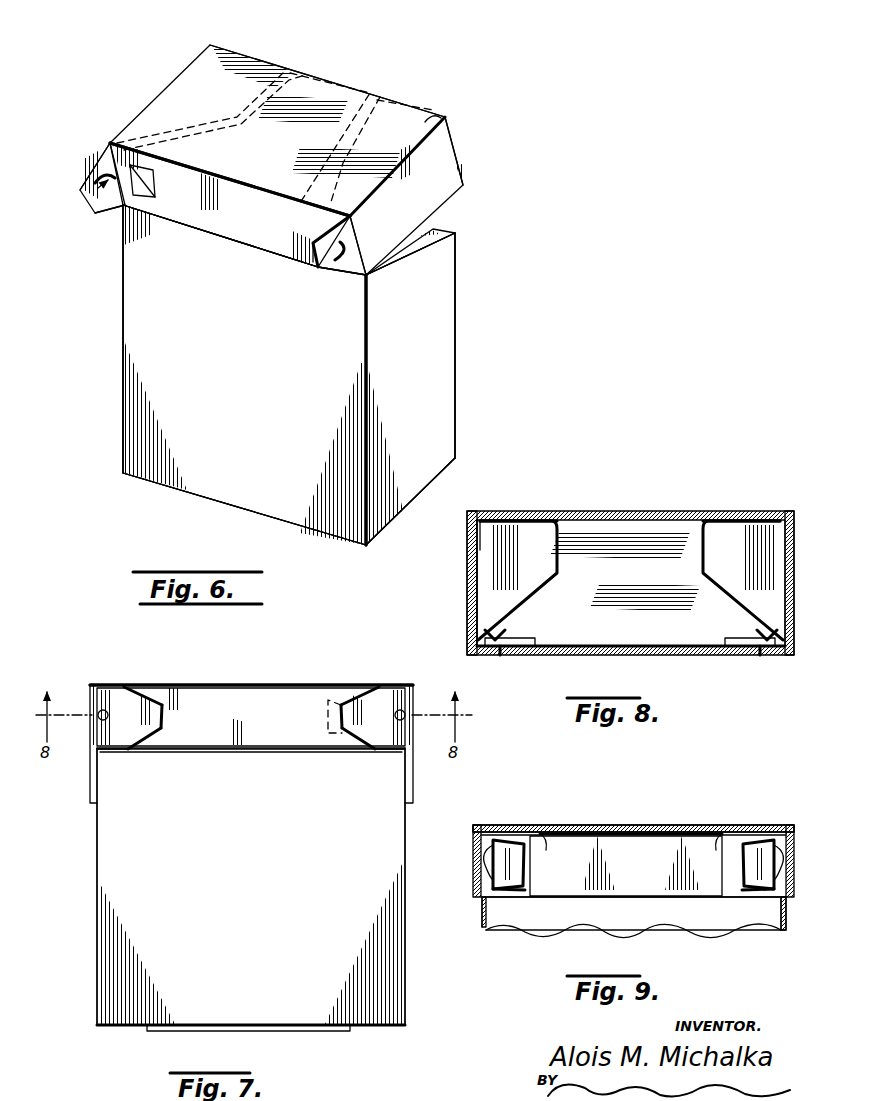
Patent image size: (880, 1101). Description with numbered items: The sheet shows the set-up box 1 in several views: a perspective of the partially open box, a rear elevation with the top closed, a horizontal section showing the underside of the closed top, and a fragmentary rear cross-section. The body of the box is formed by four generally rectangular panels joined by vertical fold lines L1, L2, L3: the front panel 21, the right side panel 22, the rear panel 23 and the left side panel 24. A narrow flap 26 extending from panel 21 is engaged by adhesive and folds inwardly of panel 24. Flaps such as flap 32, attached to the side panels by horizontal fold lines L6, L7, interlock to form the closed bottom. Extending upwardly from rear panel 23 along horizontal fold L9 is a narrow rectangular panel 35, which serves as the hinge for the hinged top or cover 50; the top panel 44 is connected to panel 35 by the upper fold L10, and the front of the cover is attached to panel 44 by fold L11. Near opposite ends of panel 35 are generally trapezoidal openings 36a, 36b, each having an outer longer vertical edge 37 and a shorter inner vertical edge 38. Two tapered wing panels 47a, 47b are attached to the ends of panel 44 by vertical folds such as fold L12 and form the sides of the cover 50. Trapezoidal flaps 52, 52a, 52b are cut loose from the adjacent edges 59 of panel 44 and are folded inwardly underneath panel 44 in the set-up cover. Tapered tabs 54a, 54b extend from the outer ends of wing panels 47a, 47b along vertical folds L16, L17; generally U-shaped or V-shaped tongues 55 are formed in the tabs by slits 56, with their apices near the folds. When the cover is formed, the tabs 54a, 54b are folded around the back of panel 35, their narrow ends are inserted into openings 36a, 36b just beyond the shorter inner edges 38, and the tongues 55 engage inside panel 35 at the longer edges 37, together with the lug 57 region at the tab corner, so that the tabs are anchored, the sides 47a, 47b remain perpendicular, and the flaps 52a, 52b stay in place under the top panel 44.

In FIG. 6, the box 1 is at (478, 165).
In FIG. 7, the box 1 is at (415, 683).
In FIG. 8, the box 1 is at (466, 648).
In FIG. 9, the box 1 is at (680, 828).
In FIG. 6, the front panel 21 is at (442, 233).
In FIG. 8, the front panel 21 is at (535, 525).
In FIG. 6, the right side panel 22 is at (440, 424).
In FIG. 9, the right side panel 22 is at (484, 912).
In FIG. 6, the rear panel 23 is at (225, 490).
In FIG. 7, the rear panel 23 is at (370, 1010).
In FIG. 9, the rear panel 23 is at (610, 920).
In FIG. 9, the left side panel 24 is at (783, 922).
In FIG. 8, the narrow flap 26 is at (470, 545).
In FIG. 7, the bottom flap 32 is at (285, 1032).
In FIG. 6, the narrow rectangular panel 35 is at (180, 207).
In FIG. 7, the narrow rectangular panel 35 is at (248, 700).
In FIG. 8, the narrow rectangular panel 35 is at (582, 650).
In FIG. 9, the narrow rectangular panel 35 is at (640, 880).
In FIG. 6, the trapezoidal opening 36a is at (290, 232).
In FIG. 8, the trapezoidal opening 36a is at (758, 655).
In FIG. 9, the trapezoidal opening 36a is at (520, 890).
In FIG. 6, the trapezoidal opening 36b is at (128, 140).
In FIG. 7, the trapezoidal opening 36b is at (165, 708).
In FIG. 8, the trapezoidal opening 36b is at (505, 655).
In FIG. 9, the trapezoidal opening 36b is at (742, 890).
In FIG. 6, the outer longer vertical edge 37 is at (128, 208).
In FIG. 7, the outer longer vertical edge 37 is at (392, 715).
In FIG. 7, the shorter inner vertical edge 38 is at (343, 705).
In FIG. 6, the top panel 44 is at (178, 96).
In FIG. 9, the top panel 44 is at (605, 834).
In FIG. 6, the tapered wing panel 47a is at (445, 155).
In FIG. 7, the tapered wing panel 47a is at (414, 775).
In FIG. 8, the tapered wing panel 47a is at (792, 608).
In FIG. 9, the tapered wing panel 47a is at (478, 870).
In FIG. 6, the tapered wing panel 47b is at (102, 178).
In FIG. 7, the tapered wing panel 47b is at (90, 795).
In FIG. 8, the tapered wing panel 47b is at (467, 605).
In FIG. 9, the tapered wing panel 47b is at (777, 885).
In FIG. 6, the hinged top or cover 50 is at (445, 114).
In FIG. 8, the hinged top or cover 50 is at (645, 630).
In FIG. 9, the hinged top or cover 50 is at (660, 825).
In FIG. 9, the trapezoidal flap 52 is at (540, 836).
In FIG. 6, the trapezoidal flap 52a is at (375, 92).
In FIG. 8, the trapezoidal flap 52a is at (760, 525).
In FIG. 6, the trapezoidal flap 52b is at (312, 80).
In FIG. 8, the trapezoidal flap 52b is at (545, 520).
In FIG. 9, the trapezoidal flap 52b is at (722, 838).
In FIG. 6, the tapered tab 54a is at (340, 272).
In FIG. 7, the tapered tab 54a is at (366, 700).
In FIG. 8, the tapered tab 54a is at (745, 642).
In FIG. 9, the tapered tab 54a is at (505, 850).
In FIG. 6, the tapered tab 54b is at (100, 198).
In FIG. 7, the tapered tab 54b is at (128, 700).
In FIG. 8, the tapered tab 54b is at (520, 642).
In FIG. 9, the tapered tab 54b is at (762, 850).
In FIG. 6, the tongue 55 is at (318, 268).
In FIG. 8, the tongue 55 is at (496, 636).
In FIG. 9, the tongue 55 is at (488, 858).
In FIG. 6, the slit 56 is at (102, 170).
In FIG. 7, the slit 56 is at (100, 720).
In FIG. 6, the lug 57 is at (95, 186).
In FIG. 6, the edge of panel 44 59 is at (447, 120).
In FIG. 6, the vertical fold line L1 is at (456, 345).
In FIG. 6, the vertical fold line L2 is at (370, 500).
In FIG. 6, the vertical fold line L3 is at (122, 402).
In FIG. 6, the horizontal fold line L6 is at (437, 480).
In FIG. 6, the horizontal fold line L7 is at (185, 492).
In FIG. 6, the horizontal fold L9 is at (243, 243).
In FIG. 9, the horizontal fold L9 is at (560, 920).
In FIG. 6, the horizontal fold L10 is at (252, 190).
In FIG. 7, the horizontal fold L10 is at (298, 688).
In FIG. 6, the fold L11 is at (262, 60).
In FIG. 6, the vertical fold L12 is at (465, 183).
In FIG. 6, the vertical fold L16 is at (375, 268).
In FIG. 6, the vertical fold L17 is at (100, 158).